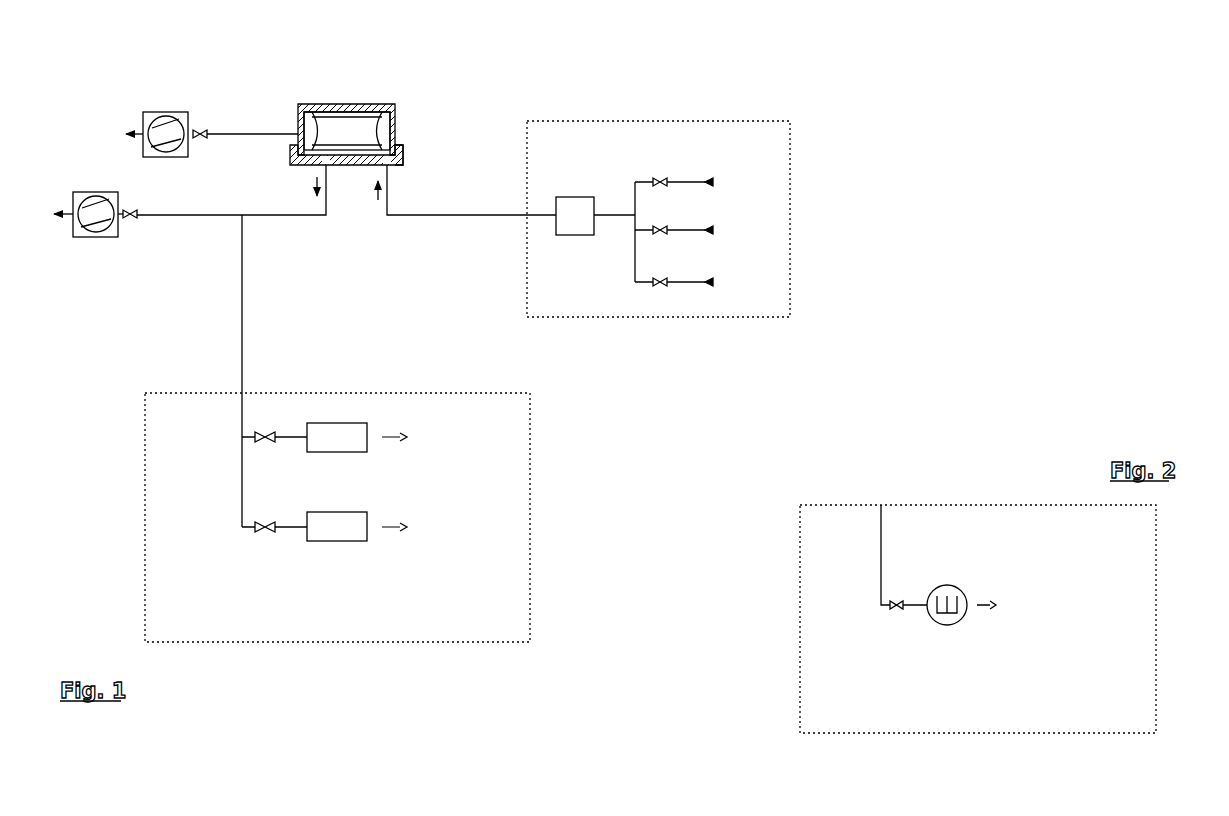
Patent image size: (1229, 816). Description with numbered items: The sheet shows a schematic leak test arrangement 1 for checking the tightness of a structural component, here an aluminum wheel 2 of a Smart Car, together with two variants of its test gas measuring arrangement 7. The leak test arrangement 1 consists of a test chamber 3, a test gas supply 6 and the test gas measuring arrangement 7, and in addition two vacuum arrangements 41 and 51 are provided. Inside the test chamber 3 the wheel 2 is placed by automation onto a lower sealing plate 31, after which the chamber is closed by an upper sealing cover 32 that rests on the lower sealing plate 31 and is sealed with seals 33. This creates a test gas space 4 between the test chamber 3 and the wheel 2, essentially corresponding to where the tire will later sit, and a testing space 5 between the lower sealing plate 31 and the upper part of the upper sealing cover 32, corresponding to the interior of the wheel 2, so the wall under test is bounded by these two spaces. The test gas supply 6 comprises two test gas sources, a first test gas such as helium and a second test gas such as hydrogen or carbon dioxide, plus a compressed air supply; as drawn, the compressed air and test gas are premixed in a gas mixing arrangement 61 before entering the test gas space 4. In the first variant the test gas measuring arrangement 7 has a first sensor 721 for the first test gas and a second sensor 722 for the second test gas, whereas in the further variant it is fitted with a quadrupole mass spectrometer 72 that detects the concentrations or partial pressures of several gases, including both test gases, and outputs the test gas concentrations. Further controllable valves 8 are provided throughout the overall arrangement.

In FIG. 1, the leak test arrangement 1 is at (545, 55).
In FIG. 1, the aluminum wheel 2 is at (388, 113).
In FIG. 1, the test chamber 3 is at (312, 88).
In FIG. 1, the lower sealing plate 31 is at (290, 156).
In FIG. 1, the upper sealing cover 32 is at (350, 107).
In FIG. 1, the seals 33 is at (403, 163).
In FIG. 1, the test gas space 4 is at (307, 130).
In FIG. 1, the testing space 5 is at (368, 133).
In FIG. 1, the vacuum arrangement 41 is at (170, 112).
In FIG. 1, the vacuum arrangement 51 is at (98, 192).
In FIG. 1, the test gas supply 6 is at (727, 122).
In FIG. 1, the test gas/compressed air gas mixing arrangement 61 is at (577, 197).
In FIG. 1, the test gas measuring arrangement 7 is at (533, 557).
In FIG. 2, the test gas measuring arrangement 7 is at (1156, 660).
In FIG. 2, the quadrupole mass spectrometer 72 is at (953, 625).
In FIG. 1, the first sensor 721 is at (337, 430).
In FIG. 1, the second sensor 722 is at (330, 532).
In FIG. 1, the controllable valves 8 is at (203, 128).
In FIG. 2, the controllable valves 8 is at (902, 613).